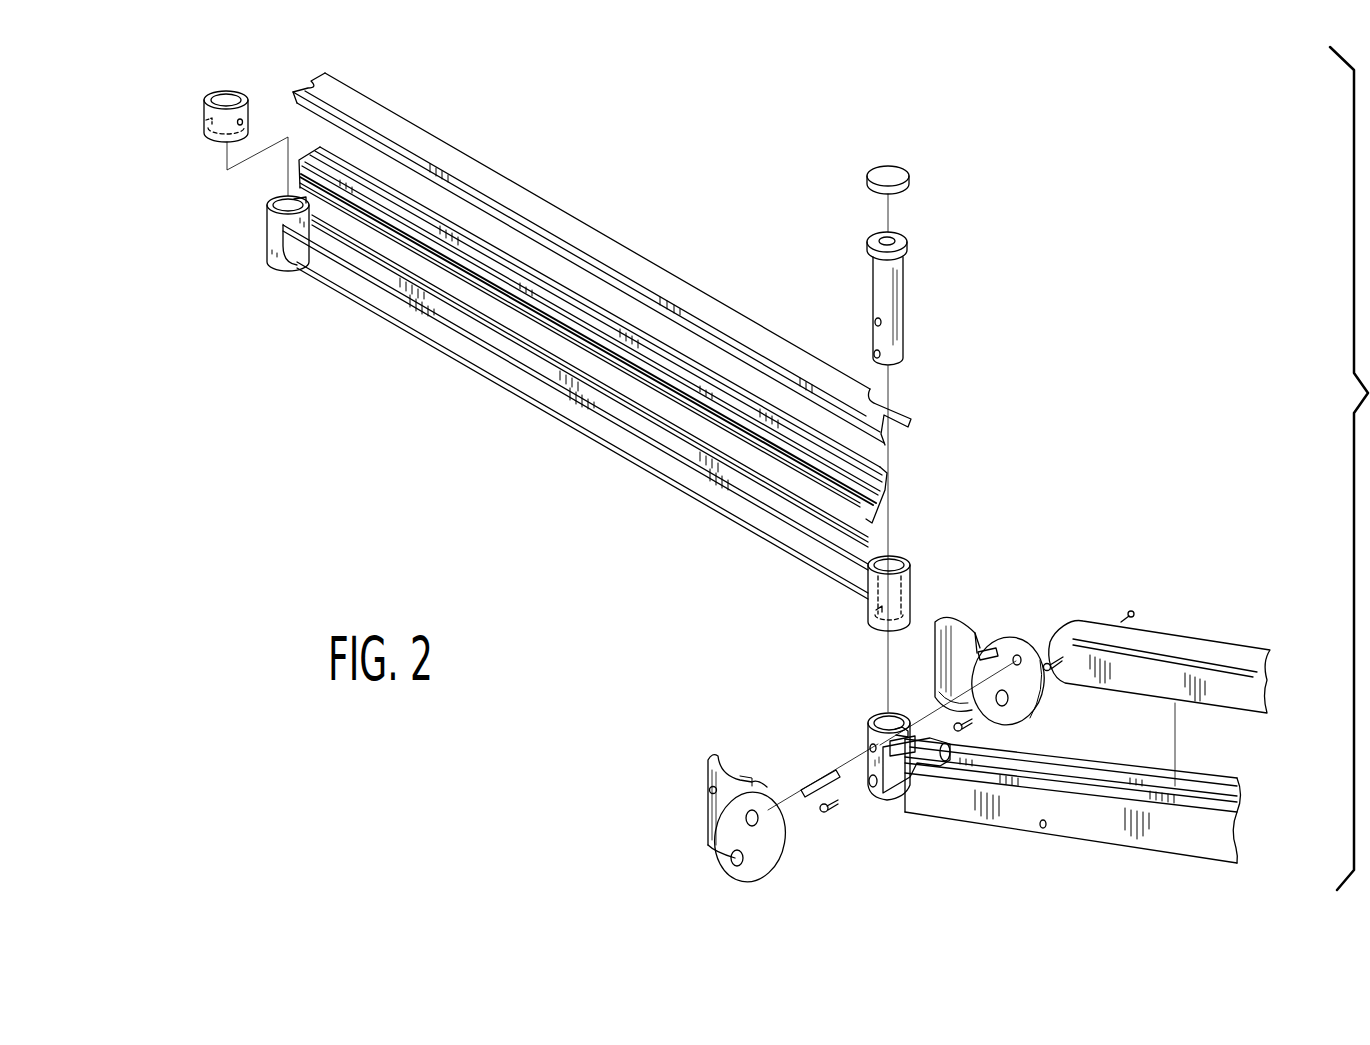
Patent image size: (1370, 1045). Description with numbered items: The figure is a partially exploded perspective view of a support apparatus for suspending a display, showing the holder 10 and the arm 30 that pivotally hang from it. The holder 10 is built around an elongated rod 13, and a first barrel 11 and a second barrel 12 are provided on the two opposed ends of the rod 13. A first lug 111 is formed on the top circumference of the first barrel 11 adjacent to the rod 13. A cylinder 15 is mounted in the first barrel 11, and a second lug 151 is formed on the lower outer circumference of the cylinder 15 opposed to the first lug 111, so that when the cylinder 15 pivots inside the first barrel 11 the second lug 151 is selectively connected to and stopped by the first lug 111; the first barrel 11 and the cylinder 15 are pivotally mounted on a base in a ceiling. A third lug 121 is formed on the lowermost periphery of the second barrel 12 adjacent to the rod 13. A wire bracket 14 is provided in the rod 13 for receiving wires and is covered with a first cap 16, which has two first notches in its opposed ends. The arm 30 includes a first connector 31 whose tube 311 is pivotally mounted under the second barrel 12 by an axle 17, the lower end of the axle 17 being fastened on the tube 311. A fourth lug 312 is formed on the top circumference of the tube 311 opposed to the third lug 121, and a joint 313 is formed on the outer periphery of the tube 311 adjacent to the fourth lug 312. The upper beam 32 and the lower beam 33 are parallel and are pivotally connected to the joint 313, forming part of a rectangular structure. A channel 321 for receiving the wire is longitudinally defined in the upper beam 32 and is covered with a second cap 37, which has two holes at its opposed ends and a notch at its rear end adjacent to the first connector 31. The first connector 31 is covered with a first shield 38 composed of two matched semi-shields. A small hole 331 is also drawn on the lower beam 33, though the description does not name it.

The holder 10 is at (516, 417).
The first barrel 11 is at (268, 245).
The first lug 111 is at (272, 208).
The second barrel 12 is at (891, 594).
The third lug 121 is at (868, 618).
The rod 13 is at (388, 310).
The wire bracket 14 is at (878, 490).
The cylinder 15 is at (203, 123).
The second lug 151 is at (205, 115).
The first cap 16 is at (540, 211).
The axle 17 is at (900, 300).
The arm 30 is at (1188, 587).
The first connector 31 is at (873, 759).
The tube 311 is at (868, 722).
The fourth lug 312 is at (893, 727).
The joint 313 is at (895, 787).
The upper beam 32 is at (1085, 765).
The channel 321 is at (1210, 790).
The lower beam 33 is at (1105, 796).
The hole of arm bar 331 is at (1040, 827).
The second cap 37 is at (1265, 655).
The first shield 38 is at (723, 825).